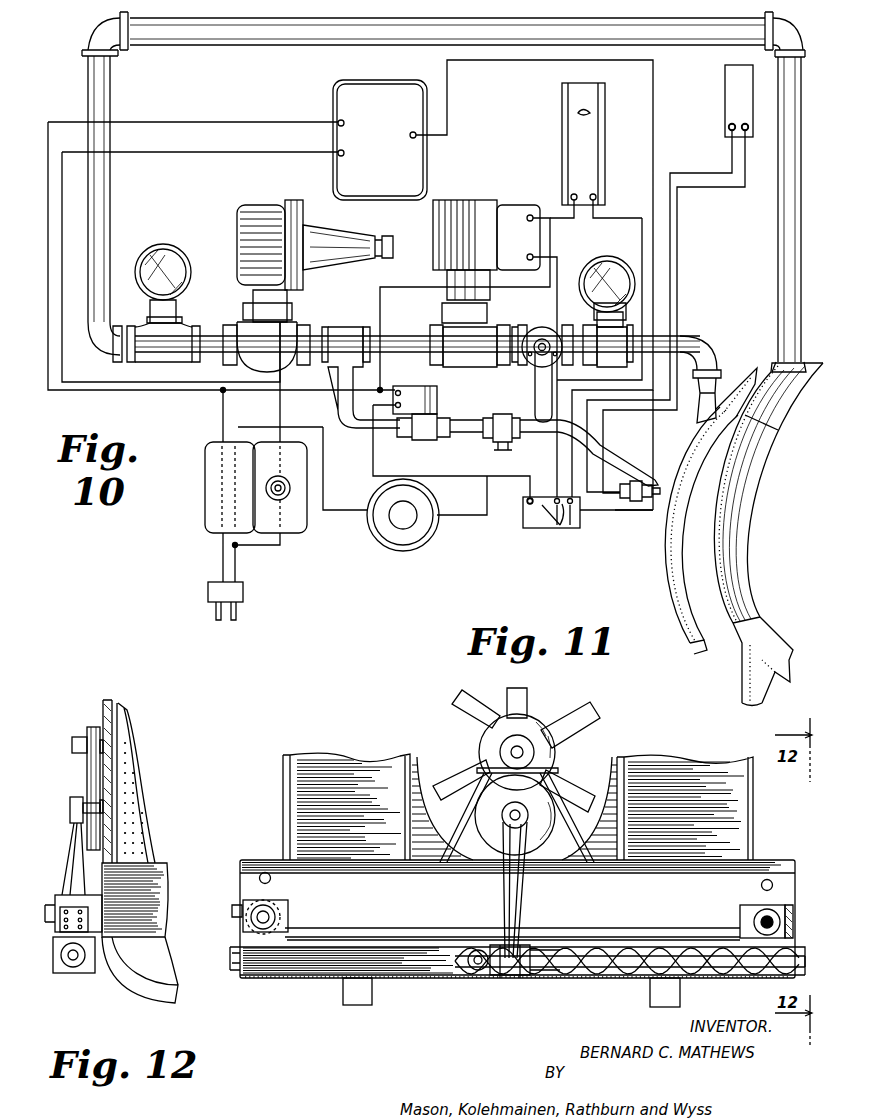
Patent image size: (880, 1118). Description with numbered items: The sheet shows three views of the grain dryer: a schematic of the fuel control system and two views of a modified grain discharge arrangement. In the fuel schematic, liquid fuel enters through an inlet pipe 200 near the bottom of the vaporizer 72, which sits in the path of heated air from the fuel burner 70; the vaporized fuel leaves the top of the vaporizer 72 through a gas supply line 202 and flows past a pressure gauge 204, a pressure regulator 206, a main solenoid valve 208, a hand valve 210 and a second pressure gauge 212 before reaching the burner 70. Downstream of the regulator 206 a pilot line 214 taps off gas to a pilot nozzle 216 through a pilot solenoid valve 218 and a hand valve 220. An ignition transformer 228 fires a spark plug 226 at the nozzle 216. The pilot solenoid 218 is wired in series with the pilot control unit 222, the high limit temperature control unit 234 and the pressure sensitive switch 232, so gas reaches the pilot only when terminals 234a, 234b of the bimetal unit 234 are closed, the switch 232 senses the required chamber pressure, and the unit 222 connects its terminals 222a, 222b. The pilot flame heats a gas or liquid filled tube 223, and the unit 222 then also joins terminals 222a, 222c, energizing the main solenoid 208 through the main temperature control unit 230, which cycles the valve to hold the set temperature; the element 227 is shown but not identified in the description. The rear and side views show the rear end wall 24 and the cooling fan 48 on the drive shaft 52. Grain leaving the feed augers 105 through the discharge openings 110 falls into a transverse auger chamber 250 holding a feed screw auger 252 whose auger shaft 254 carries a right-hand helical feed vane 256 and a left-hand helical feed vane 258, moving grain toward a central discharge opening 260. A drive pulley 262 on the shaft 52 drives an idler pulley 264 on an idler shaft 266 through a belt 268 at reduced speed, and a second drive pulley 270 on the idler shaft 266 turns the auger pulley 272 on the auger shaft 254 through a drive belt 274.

In FIG. 10, the gas supply line 202 is at (348, 20).
In FIG. 10, the pressure gauge 204 is at (198, 224).
In FIG. 10, the pressure regulator 206 is at (276, 178).
In FIG. 10, the main solenoid valve 208 is at (494, 178).
In FIG. 10, the hand valve 210 is at (556, 332).
In FIG. 10, the second pressure gauge 212 is at (612, 238).
In FIG. 10, the pilot line 214 is at (468, 418).
In FIG. 10, the pilot nozzle 216 is at (655, 478).
In FIG. 10, the pilot solenoid valve 218 is at (436, 412).
In FIG. 10, the hand valve 220 is at (478, 440).
In FIG. 10, the pilot control unit 222 is at (534, 535).
In FIG. 10, the terminal 222a is at (570, 528).
In FIG. 10, the terminal 222b is at (526, 512).
In FIG. 10, the terminal 222c is at (558, 528).
In FIG. 10, the gas or liquid filled tube 223 is at (650, 514).
In FIG. 10, the spark plug 226 is at (645, 500).
In FIG. 10, the plug and receptacle box 227 is at (285, 538).
In FIG. 10, the ignition transformer 228 is at (354, 78).
In FIG. 10, the main temperature control unit 230 is at (562, 100).
In FIG. 10, the pressure sensitive switch 232 is at (385, 530).
In FIG. 10, the high limit temperature control unit 234 is at (725, 100).
In FIG. 10, the terminal 234a is at (741, 131).
In FIG. 10, the terminal 234b is at (730, 125).
In FIG. 10, the fuel burner 70 is at (665, 582).
In FIG. 10, the vaporizer 72 is at (741, 553).
In FIG. 10, the inlet pipe 200 is at (742, 672).
In FIG. 11, the end wall 24 is at (300, 788).
In FIG. 11, the cold air fan 48 is at (578, 706).
In FIG. 11, the drive shaft 52 is at (520, 748).
In FIG. 12, the drive shaft 52 is at (72, 745).
In FIG. 11, the drive pulley 262 is at (510, 738).
In FIG. 12, the drive pulley 262 is at (88, 727).
In FIG. 11, the idler pulley 264 is at (486, 862).
In FIG. 12, the idler pulley 264 is at (87, 775).
In FIG. 11, the idler shaft 266 is at (530, 805).
In FIG. 12, the idler shaft 266 is at (70, 810).
In FIG. 12, the belt 268 is at (93, 727).
In FIG. 11, the second drive pulley 270 is at (536, 860).
In FIG. 12, the second drive pulley 270 is at (84, 803).
In FIG. 11, the auger pulley 272 is at (504, 945).
In FIG. 12, the drive belt 274 is at (72, 855).
In FIG. 11, the feed screw auger 105 is at (274, 900).
In FIG. 12, the feed screw auger 105 is at (66, 878).
In FIG. 11, the discharge openings 110 is at (283, 918).
In FIG. 11, the transverse auger chamber 250 is at (325, 982).
In FIG. 12, the transverse auger chamber 250 is at (100, 980).
In FIG. 11, the feed screw auger 252 is at (645, 980).
In FIG. 12, the feed screw auger 252 is at (68, 965).
In FIG. 11, the auger shaft 254 is at (474, 972).
In FIG. 11, the helical feed vane 256 is at (492, 978).
In FIG. 11, the helical feed vane 258 is at (545, 976).
In FIG. 11, the central grain discharge opening 260 is at (508, 980).